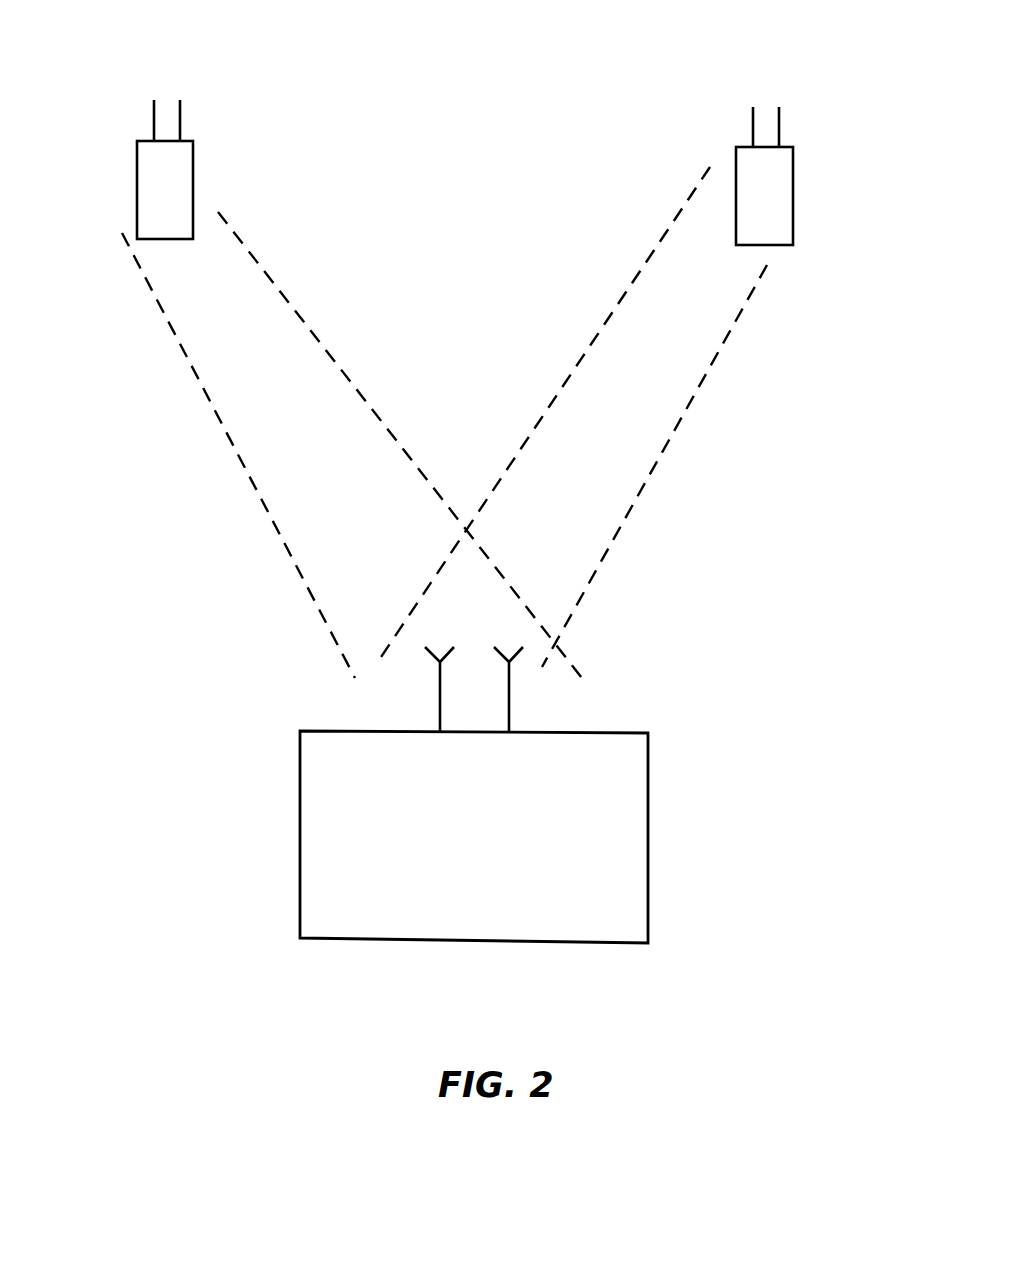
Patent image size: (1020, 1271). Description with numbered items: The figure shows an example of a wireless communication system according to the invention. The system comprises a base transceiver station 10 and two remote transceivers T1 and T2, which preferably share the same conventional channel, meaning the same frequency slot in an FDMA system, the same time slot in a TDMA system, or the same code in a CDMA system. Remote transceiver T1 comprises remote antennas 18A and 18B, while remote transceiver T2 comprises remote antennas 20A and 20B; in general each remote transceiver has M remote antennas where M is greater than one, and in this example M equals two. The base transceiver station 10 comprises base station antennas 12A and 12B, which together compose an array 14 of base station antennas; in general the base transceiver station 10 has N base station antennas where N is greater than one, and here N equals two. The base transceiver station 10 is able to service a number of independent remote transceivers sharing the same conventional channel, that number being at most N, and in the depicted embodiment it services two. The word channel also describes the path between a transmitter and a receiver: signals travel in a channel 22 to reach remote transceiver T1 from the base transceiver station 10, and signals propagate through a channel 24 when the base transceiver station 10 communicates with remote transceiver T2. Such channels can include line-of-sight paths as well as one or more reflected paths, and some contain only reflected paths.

The base transceiver station 10 is at (648, 856).
The base station antenna 12A is at (440, 677).
The base station antenna 12B is at (509, 683).
The array of base station antennas 14 is at (592, 619).
The remote antenna 18A is at (153, 123).
The remote antenna 18B is at (180, 120).
The remote antenna 20A is at (752, 127).
The remote antenna 20B is at (779, 126).
The channel 22 is at (293, 305).
The channel 24 is at (682, 418).
The remote transceiver T1 is at (193, 165).
The remote transceiver T2 is at (793, 195).